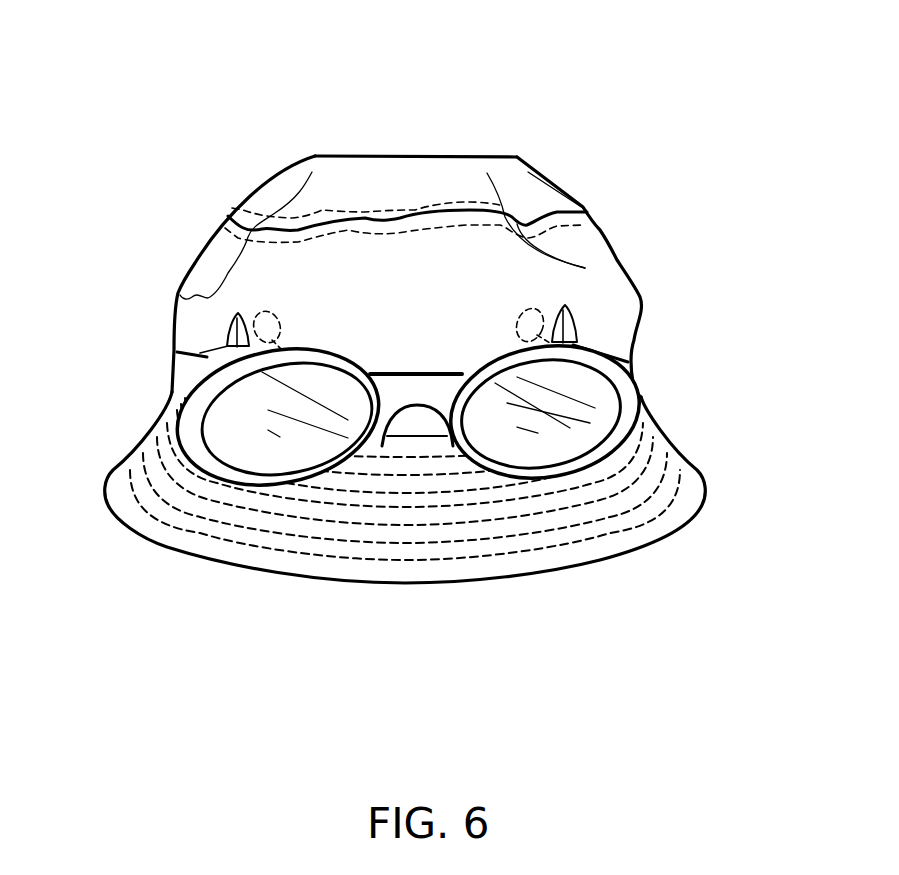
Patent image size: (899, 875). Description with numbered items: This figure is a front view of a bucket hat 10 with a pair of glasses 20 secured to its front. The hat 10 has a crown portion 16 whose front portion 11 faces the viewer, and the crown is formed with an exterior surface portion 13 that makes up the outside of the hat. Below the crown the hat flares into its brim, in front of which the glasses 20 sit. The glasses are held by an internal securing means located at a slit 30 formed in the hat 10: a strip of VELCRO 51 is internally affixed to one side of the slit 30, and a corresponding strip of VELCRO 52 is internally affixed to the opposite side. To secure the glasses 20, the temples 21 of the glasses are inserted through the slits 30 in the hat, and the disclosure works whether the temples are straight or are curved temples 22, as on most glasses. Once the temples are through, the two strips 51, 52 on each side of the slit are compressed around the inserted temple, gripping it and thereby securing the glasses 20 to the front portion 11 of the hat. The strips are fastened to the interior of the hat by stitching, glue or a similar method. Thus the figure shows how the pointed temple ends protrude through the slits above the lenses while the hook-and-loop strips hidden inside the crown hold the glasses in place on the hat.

The bucket hat 10 is at (567, 162).
The front portion 11 is at (435, 278).
The exterior surface portion 13 is at (272, 197).
The crown portion 16 is at (432, 153).
The glasses 20 is at (550, 412).
The temples 21 is at (580, 340).
The curved temples 22 is at (527, 320).
The slit 30 is at (146, 359).
The strip of VELCRO 51 is at (228, 331).
The corresponding strip of VELCRO 52 is at (227, 340).